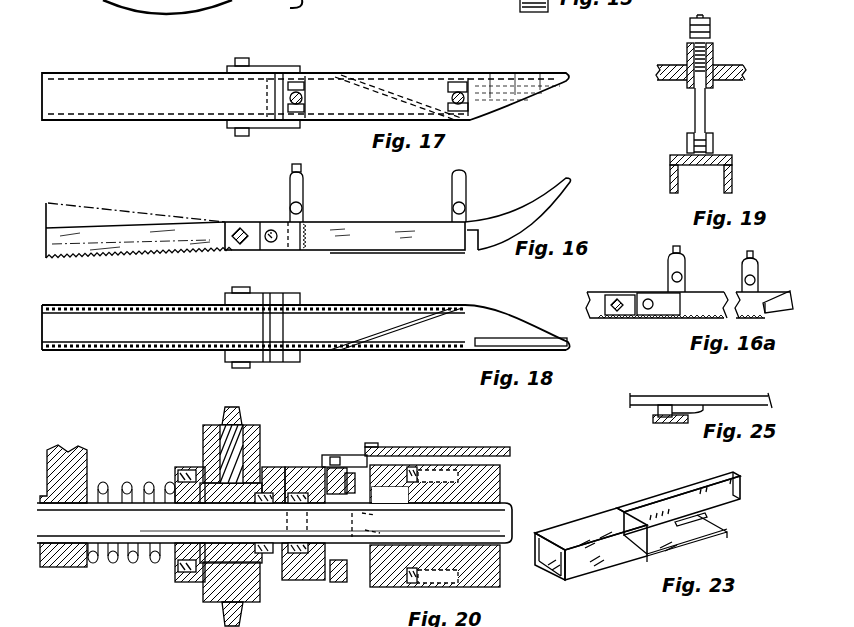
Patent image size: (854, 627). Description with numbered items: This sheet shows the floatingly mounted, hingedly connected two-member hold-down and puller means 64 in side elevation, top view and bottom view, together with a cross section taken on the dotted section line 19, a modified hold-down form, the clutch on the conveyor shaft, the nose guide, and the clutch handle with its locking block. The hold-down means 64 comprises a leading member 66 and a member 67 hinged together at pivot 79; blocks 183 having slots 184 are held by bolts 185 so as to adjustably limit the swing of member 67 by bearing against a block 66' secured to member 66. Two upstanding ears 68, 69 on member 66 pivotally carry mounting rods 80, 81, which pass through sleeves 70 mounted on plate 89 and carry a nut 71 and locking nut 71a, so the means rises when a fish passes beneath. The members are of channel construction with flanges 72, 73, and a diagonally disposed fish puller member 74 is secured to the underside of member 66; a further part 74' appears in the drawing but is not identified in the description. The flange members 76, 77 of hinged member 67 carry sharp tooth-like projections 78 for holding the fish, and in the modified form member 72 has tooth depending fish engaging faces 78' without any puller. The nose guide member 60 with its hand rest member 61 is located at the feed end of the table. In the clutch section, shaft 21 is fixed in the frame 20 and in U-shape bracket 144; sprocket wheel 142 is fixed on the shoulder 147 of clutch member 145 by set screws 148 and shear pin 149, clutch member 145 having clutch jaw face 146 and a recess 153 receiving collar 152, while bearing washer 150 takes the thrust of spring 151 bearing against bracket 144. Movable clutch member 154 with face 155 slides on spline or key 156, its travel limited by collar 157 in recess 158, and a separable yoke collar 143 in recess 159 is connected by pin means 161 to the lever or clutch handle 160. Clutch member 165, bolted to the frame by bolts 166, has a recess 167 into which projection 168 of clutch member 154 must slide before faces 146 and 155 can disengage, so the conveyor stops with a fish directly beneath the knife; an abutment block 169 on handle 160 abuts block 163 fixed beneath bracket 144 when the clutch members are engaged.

In FIG. 16, the section line 19 is at (476, 160).
In FIG. 20, the frame 20 is at (518, 453).
In FIG. 20, the shaft 21 is at (507, 514).
In FIG. 23, the nose guide member 60 is at (653, 490).
In FIG. 23, the hand rest member 61 is at (602, 538).
In FIG. 17, the combined puller and hold-down means 64 is at (527, 68).
In FIG. 16, the combined puller and hold-down means 64 is at (528, 192).
In FIG. 18, the combined puller and hold-down means 64 is at (519, 307).
In FIG. 16A, the combined puller and hold-down means 64 is at (770, 292).
In FIG. 19, the combined puller and hold-down means 64 is at (744, 157).
In FIG. 17, the leading member 66 is at (398, 84).
In FIG. 16, the leading member 66 is at (363, 212).
In FIG. 18, the leading member 66 is at (389, 342).
In FIG. 17, the block 66' is at (311, 87).
In FIG. 16, the block 66' is at (307, 264).
In FIG. 18, the block 66' is at (329, 304).
In FIG. 16A, the block 66' is at (705, 273).
In FIG. 17, the hinged member 67 is at (70, 80).
In FIG. 16, the hinged member 67 is at (104, 228).
In FIG. 18, the hinged member 67 is at (150, 338).
In FIG. 16A, the hinged member 67 is at (633, 295).
In FIG. 17, the upstanding ear 68 is at (467, 107).
In FIG. 16, the upstanding ear 68 is at (450, 208).
In FIG. 19, the upstanding ear 68 is at (688, 138).
In FIG. 17, the upstanding ear 69 is at (302, 82).
In FIG. 16, the upstanding ear 69 is at (308, 222).
In FIG. 19, the sleeve 70 is at (714, 58).
In FIG. 19, the nut 71 is at (712, 23).
In FIG. 19, the locking nut 71a is at (713, 34).
In FIG. 17, the flange 72 is at (345, 118).
In FIG. 16, the flange 72 is at (370, 252).
In FIG. 18, the flange 72 is at (364, 308).
In FIG. 16A, the flange 72 is at (729, 292).
In FIG. 19, the flange 72 is at (733, 180).
In FIG. 17, the flange 73 is at (325, 102).
In FIG. 18, the flange 73 is at (402, 350).
In FIG. 19, the flange 73 is at (670, 178).
In FIG. 17, the fish puller member 74 is at (415, 80).
In FIG. 18, the fish puller member 74 is at (497, 327).
In FIG. 16, the tip portion 74' is at (397, 269).
In FIG. 17, the flange member 76 is at (133, 112).
In FIG. 16, the flange member 76 is at (136, 250).
In FIG. 18, the flange member 76 is at (98, 310).
In FIG. 17, the flange member 77 is at (107, 80).
In FIG. 18, the flange member 77 is at (134, 346).
In FIG. 16, the tooth-like projections 78 is at (82, 277).
In FIG. 16A, the tooth-like projections 78 is at (620, 338).
In FIG. 16A, the tooth depending fish engaging faces 78' is at (666, 338).
In FIG. 17, the pivot 79 is at (263, 98).
In FIG. 16, the pivot 79 is at (271, 229).
In FIG. 18, the pivot 79 is at (326, 318).
In FIG. 16A, the pivot 79 is at (643, 315).
In FIG. 17, the mounting rod 80 is at (448, 92).
In FIG. 16, the mounting rod 80 is at (466, 198).
In FIG. 16A, the mounting rod 80 is at (751, 267).
In FIG. 19, the mounting rod 80 is at (697, 105).
In FIG. 17, the mounting rod 81 is at (285, 107).
In FIG. 16, the mounting rod 81 is at (290, 190).
In FIG. 16A, the mounting rod 81 is at (686, 261).
In FIG. 19, the plate 89 is at (735, 78).
In FIG. 20, the sprocket wheel 142 is at (238, 432).
In FIG. 20, the yoke collar 143 is at (356, 478).
In FIG. 25, the U-shape bracket 144 is at (767, 391).
In FIG. 20, the U-shape bracket 144 is at (57, 456).
In FIG. 20, the clutch member 145 is at (268, 441).
In FIG. 20, the clutch jaw face 146 is at (265, 512).
In FIG. 20, the shoulder 147 is at (233, 490).
In FIG. 20, the set screws 148 is at (191, 473).
In FIG. 20, the shear pin 149 is at (204, 607).
In FIG. 20, the bearing washer 150 is at (177, 572).
In FIG. 20, the spring 151 is at (108, 566).
In FIG. 20, the collar 152 is at (283, 461).
In FIG. 20, the recess 153 is at (305, 575).
In FIG. 20, the movable clutch member 154 is at (305, 588).
In FIG. 20, the clutch face 155 is at (333, 524).
In FIG. 20, the spline or key 156 is at (340, 563).
In FIG. 20, the collar 157 is at (329, 466).
In FIG. 20, the recess 158 is at (292, 492).
In FIG. 20, the recess 159 is at (338, 574).
In FIG. 25, the lever or clutch handle 160 is at (655, 419).
In FIG. 20, the lever or clutch handle 160 is at (350, 455).
In FIG. 20, the pin means 161 is at (370, 455).
In FIG. 25, the block member 163 is at (692, 405).
In FIG. 20, the clutch member 165 is at (415, 493).
In FIG. 20, the bolts 166 is at (411, 466).
In FIG. 20, the recess 167 is at (385, 525).
In FIG. 20, the projection 168 is at (409, 577).
In FIG. 25, the abutment block 169 is at (665, 407).
In FIG. 17, the blocks 183 is at (228, 68).
In FIG. 16, the blocks 183 is at (250, 228).
In FIG. 18, the blocks 183 is at (227, 300).
In FIG. 16A, the blocks 183 is at (643, 296).
In FIG. 16, the slots 184 is at (232, 248).
In FIG. 17, the bolts 185 is at (249, 64).
In FIG. 16, the bolts 185 is at (232, 228).
In FIG. 18, the bolts 185 is at (248, 343).